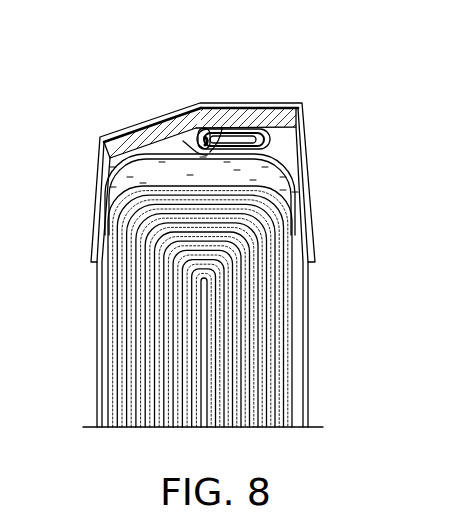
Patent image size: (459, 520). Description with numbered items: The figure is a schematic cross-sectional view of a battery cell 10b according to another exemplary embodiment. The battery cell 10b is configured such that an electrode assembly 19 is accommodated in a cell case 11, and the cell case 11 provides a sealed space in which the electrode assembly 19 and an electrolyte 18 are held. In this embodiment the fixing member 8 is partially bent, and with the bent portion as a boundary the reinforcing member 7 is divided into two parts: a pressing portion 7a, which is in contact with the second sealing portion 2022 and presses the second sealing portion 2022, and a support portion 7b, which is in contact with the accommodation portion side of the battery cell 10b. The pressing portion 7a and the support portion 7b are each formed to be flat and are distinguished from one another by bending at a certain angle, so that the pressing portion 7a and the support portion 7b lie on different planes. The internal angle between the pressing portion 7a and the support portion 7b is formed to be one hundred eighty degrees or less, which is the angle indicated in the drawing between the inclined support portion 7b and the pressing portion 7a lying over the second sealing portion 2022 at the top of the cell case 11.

The battery cell 10b is at (368, 48).
The reinforcing member 7 is at (234, 94).
The pressing portion 7a is at (255, 118).
The support portion 7b is at (163, 133).
The fixing member 8 is at (98, 168).
The cell case 11 is at (310, 323).
The electrolyte 18 is at (280, 170).
The electrode assembly 19 is at (268, 350).
The second sealing portion 2022 is at (270, 140).